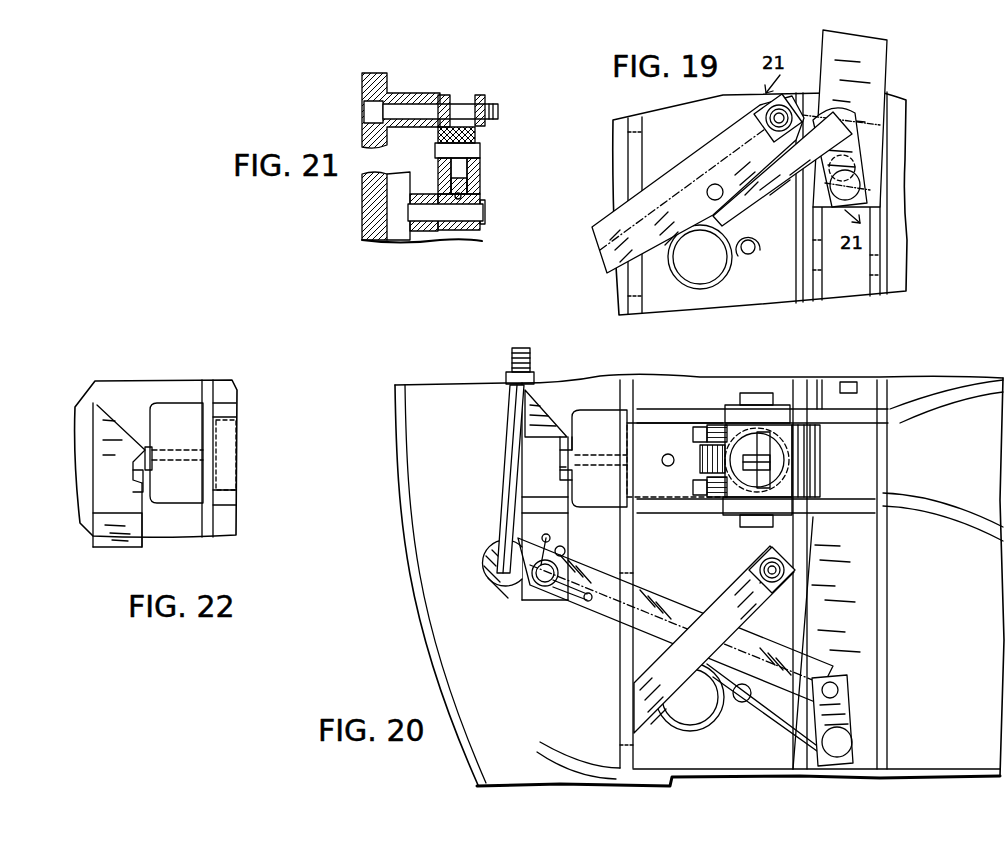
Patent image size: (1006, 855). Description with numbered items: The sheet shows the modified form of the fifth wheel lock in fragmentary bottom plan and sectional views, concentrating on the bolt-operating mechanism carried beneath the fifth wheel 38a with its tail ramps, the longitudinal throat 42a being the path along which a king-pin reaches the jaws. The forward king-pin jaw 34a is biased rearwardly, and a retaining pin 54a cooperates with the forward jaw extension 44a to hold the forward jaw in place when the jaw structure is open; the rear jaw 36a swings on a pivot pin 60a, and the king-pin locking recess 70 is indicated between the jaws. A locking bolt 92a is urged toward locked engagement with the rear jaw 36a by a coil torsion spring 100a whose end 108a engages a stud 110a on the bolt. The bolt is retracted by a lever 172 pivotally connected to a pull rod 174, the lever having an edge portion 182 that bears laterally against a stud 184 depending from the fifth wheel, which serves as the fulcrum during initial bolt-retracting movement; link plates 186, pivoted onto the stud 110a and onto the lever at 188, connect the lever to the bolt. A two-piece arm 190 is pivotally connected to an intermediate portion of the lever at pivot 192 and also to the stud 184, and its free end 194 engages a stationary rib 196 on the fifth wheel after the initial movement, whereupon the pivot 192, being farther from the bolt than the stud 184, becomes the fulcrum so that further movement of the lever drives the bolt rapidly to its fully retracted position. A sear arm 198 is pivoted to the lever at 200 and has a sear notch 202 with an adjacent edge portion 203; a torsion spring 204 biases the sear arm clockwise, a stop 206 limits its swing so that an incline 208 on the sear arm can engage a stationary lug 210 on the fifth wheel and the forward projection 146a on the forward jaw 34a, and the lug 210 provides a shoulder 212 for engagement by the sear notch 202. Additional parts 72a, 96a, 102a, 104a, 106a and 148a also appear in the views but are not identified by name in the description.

In FIG. 20, the forward king-pin jaw 34a is at (718, 428).
In FIG. 20, the rear jaw 36a is at (822, 445).
In FIG. 20, the fifth wheel 38a is at (940, 392).
In FIG. 20, the longitudinal throat 42a is at (868, 497).
In FIG. 22, the forward jaw extension 44a is at (232, 434).
In FIG. 20, the forward jaw extension 44a is at (678, 425).
In FIG. 20, the retaining pin 54a is at (671, 468).
In FIG. 20, the pivot pin 60a is at (762, 393).
In FIG. 20, the locking recess 70 is at (795, 470).
In FIG. 20, the bearing cap 72a is at (727, 485).
In FIG. 21, the locking bolt 92a is at (424, 231).
In FIG. 19, the locking bolt 92a is at (886, 72).
In FIG. 20, the locking bolt 92a is at (868, 616).
In FIG. 20, the upright 96a is at (817, 564).
In FIG. 19, the coil torsion spring 100a is at (706, 285).
In FIG. 20, the coil torsion spring 100a is at (702, 726).
In FIG. 19, the hub flange 102a is at (692, 280).
In FIG. 20, the hub flange 102a is at (682, 731).
In FIG. 19, the pin 104a is at (770, 235).
In FIG. 20, the pin 104a is at (742, 693).
In FIG. 19, the bushing 106a is at (749, 257).
In FIG. 21, the spring end 108a is at (460, 231).
In FIG. 21, the stud 110a is at (486, 210).
In FIG. 19, the stud 110a is at (862, 187).
In FIG. 20, the stud 110a is at (852, 742).
In FIG. 22, the forward projection 146a is at (165, 463).
In FIG. 20, the forward projection 146a is at (592, 462).
In FIG. 22, the slot block 148a is at (162, 452).
In FIG. 20, the slot block 148a is at (590, 455).
In FIG. 19, the lever 172 is at (592, 218).
In FIG. 20, the lever 172 is at (582, 623).
In FIG. 20, the pull rod 174 is at (500, 538).
In FIG. 21, the edge portion 182 is at (478, 139).
In FIG. 21, the stud 184 is at (458, 97).
In FIG. 19, the stud 184 is at (765, 115).
In FIG. 20, the stud 184 is at (763, 570).
In FIG. 21, the link plates 186 is at (480, 178).
In FIG. 19, the link plates 186 is at (866, 160).
In FIG. 20, the link plates 186 is at (855, 699).
In FIG. 21, the pivot 188 is at (481, 152).
In FIG. 19, the pivot 188 is at (838, 124).
In FIG. 20, the pivot 188 is at (834, 682).
In FIG. 21, the two-piece arm 190 is at (442, 96).
In FIG. 19, the two-piece arm 190 is at (782, 169).
In FIG. 20, the two-piece arm 190 is at (737, 622).
In FIG. 19, the pivot 192 is at (712, 184).
In FIG. 20, the pivot 192 is at (708, 643).
In FIG. 19, the free end 194 is at (657, 195).
In FIG. 20, the free end 194 is at (634, 720).
In FIG. 19, the stationary rib 196 is at (630, 285).
In FIG. 20, the stationary rib 196 is at (623, 699).
In FIG. 22, the sear arm 198 is at (105, 540).
In FIG. 20, the sear arm 198 is at (565, 541).
In FIG. 20, the pivot 200 is at (540, 587).
In FIG. 22, the sear notch 202 is at (143, 463).
In FIG. 20, the sear notch 202 is at (566, 448).
In FIG. 22, the edge portion 203 is at (121, 444).
In FIG. 20, the torsion spring 204 is at (572, 603).
In FIG. 20, the stop 206 is at (566, 551).
In FIG. 22, the incline 208 is at (118, 425).
In FIG. 20, the incline 208 is at (542, 428).
In FIG. 22, the stationary lug 210 is at (135, 485).
In FIG. 20, the stationary lug 210 is at (583, 498).
In FIG. 20, the shoulder 212 is at (562, 469).